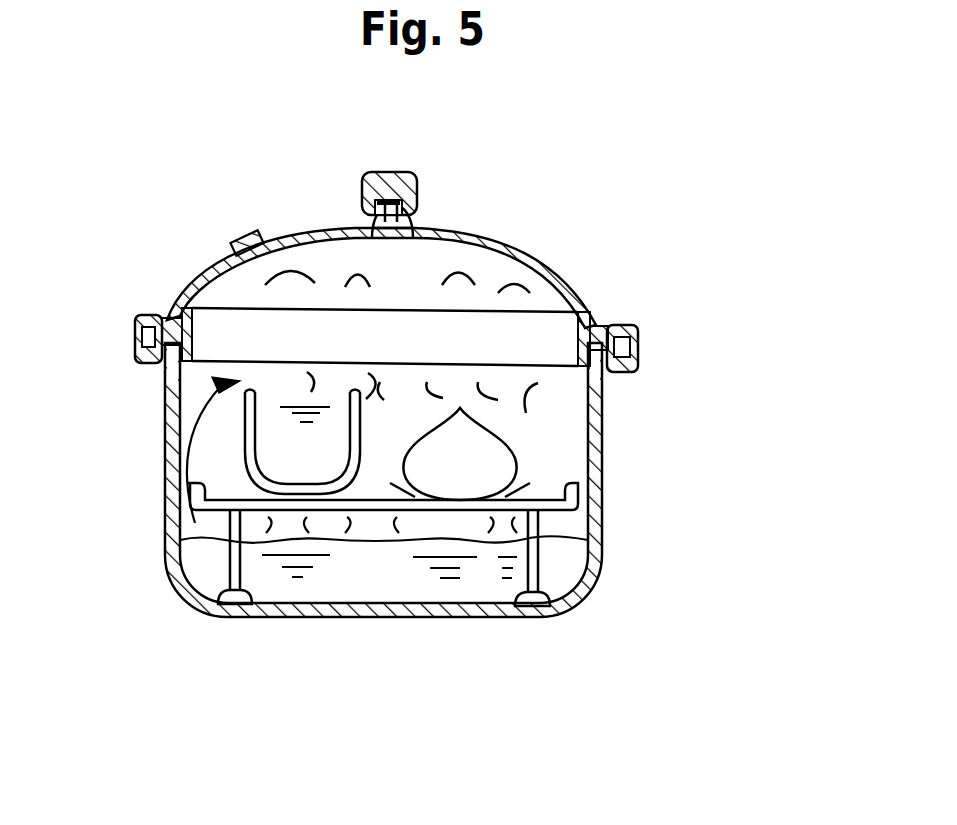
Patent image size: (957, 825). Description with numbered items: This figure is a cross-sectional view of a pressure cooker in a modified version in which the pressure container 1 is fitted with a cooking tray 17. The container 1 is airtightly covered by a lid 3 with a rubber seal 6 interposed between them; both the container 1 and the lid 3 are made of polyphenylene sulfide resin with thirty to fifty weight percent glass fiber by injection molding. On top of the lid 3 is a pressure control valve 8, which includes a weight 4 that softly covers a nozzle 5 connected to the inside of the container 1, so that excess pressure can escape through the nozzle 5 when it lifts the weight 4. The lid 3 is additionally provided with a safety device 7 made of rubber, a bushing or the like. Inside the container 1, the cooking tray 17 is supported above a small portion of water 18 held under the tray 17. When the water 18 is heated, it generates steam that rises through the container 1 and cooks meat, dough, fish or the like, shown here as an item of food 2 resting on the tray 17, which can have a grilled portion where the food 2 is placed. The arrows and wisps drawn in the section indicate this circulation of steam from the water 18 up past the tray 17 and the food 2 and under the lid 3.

The pressure container 1 is at (597, 413).
The food item 2 is at (457, 477).
The lid 3 is at (560, 262).
The weight 4 is at (414, 168).
The nozzle 5 is at (418, 212).
The rubber seal 6 is at (164, 316).
The safety device 7 is at (240, 230).
The pressure control valve 8 is at (367, 163).
The cooking tray 17 is at (567, 530).
The water 18 is at (548, 585).